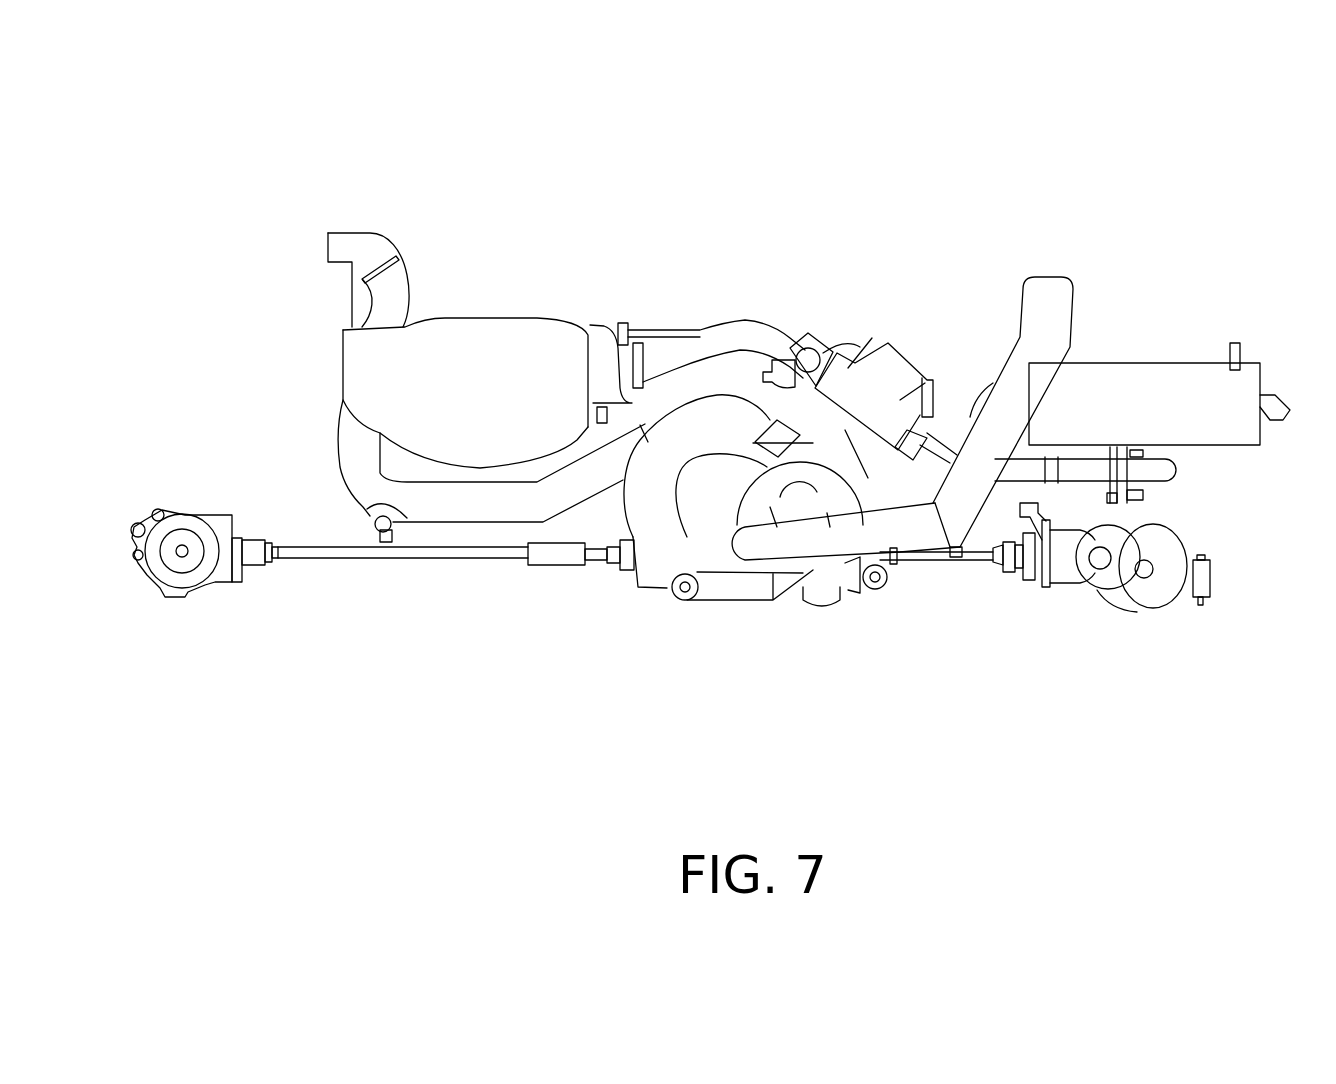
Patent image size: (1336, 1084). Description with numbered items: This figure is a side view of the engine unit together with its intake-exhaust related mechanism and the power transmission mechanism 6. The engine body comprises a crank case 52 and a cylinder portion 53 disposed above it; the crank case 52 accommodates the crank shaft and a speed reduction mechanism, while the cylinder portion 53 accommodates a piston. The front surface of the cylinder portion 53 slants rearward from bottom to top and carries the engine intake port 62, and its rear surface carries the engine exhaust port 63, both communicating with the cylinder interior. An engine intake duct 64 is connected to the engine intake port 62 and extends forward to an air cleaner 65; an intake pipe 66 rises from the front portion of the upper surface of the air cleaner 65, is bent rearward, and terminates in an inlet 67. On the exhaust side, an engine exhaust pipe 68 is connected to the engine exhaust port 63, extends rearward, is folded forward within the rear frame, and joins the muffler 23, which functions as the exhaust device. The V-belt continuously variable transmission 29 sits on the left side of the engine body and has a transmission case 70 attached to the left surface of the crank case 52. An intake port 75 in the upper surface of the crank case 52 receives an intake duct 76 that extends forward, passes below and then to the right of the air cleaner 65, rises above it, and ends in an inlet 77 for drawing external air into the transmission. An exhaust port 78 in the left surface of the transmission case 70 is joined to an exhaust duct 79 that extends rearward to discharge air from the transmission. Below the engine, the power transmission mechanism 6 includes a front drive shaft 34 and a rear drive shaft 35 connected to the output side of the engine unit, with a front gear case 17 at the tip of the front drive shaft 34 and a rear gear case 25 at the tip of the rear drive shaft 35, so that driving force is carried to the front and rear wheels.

The power transmission mechanism 6 is at (567, 590).
The front gear case 17 is at (187, 517).
The muffler 23 is at (1152, 373).
The rear gear case 25 is at (1103, 585).
The V-belt continuously variable transmission 29 is at (689, 575).
The front drive shaft 34 is at (317, 553).
The rear drive shaft 35 is at (945, 560).
The crank case 52 is at (795, 430).
The cylinder portion 53 is at (870, 393).
The engine intake port 62 is at (825, 353).
The engine exhaust port 63 is at (947, 433).
The engine intake duct 64 is at (705, 345).
The air cleaner 65 is at (483, 333).
The intake pipe 66 is at (392, 277).
The inlet 67 is at (366, 253).
The engine exhaust pipe 68 is at (1177, 472).
The transmission case 70 is at (658, 543).
The intake port 75 is at (763, 428).
The intake duct 76 is at (480, 507).
The inlet 77 is at (322, 237).
The exhaust port 78 is at (723, 555).
The exhaust duct 79 is at (868, 543).